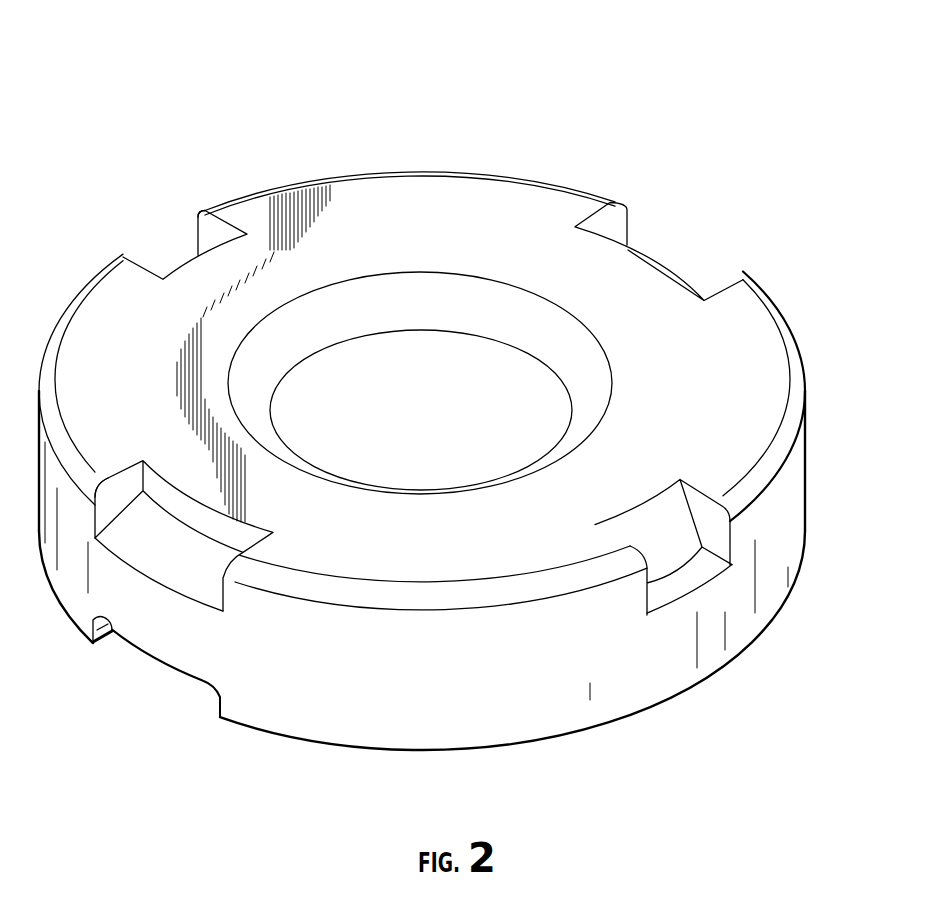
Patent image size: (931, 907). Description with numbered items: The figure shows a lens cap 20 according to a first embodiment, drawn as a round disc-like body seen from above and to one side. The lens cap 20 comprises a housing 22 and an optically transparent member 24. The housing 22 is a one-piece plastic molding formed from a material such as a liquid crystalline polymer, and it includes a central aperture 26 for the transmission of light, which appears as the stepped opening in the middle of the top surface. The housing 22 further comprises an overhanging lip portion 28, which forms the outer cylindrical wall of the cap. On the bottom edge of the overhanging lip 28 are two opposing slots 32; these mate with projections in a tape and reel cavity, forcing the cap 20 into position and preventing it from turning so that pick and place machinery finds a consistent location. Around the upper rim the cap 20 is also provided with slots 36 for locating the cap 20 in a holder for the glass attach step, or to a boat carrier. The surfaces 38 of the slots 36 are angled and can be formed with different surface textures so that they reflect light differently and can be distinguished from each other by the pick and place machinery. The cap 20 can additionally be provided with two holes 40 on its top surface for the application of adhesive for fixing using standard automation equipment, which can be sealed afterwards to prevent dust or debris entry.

The lens cap 20 is at (430, 140).
The housing 22 is at (730, 322).
The optically transparent member 24 is at (478, 360).
The aperture 26 is at (440, 362).
The overhanging lip portion 28 is at (570, 708).
The slots 32 is at (165, 668).
The slots 36 is at (675, 272).
The surfaces 38 is at (170, 565).
The holes 40 is at (182, 255).